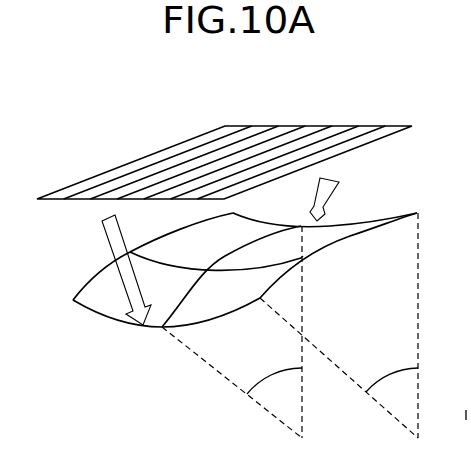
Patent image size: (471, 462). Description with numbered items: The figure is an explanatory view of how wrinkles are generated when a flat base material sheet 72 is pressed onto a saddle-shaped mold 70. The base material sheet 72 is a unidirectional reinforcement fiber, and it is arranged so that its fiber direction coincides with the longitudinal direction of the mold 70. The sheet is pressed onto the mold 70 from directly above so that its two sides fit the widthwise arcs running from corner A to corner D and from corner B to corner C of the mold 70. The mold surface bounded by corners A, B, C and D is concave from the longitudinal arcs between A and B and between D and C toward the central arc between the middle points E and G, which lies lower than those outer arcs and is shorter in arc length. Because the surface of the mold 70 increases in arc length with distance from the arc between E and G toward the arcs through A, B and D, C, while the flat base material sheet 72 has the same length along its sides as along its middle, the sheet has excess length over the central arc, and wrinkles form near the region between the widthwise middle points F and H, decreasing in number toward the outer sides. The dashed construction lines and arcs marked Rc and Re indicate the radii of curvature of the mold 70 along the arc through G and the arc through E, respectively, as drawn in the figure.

The base material sheet 72 is at (152, 163).
The mold 70 is at (102, 321).
The corner point A of mold surface A is at (425, 319).
The corner point B of mold surface B is at (335, 368).
The corner point C of mold surface C is at (66, 303).
The corner point D of mold surface D is at (238, 208).
The longitudinal middle point E of mold E is at (298, 323).
The widthwise middle point F of mold F is at (309, 265).
The longitudinal middle point G of mold G is at (227, 382).
The widthwise middle point H of mold H is at (133, 241).
The radius of curvature Rc is at (274, 375).
The radius of curvature Re is at (392, 373).